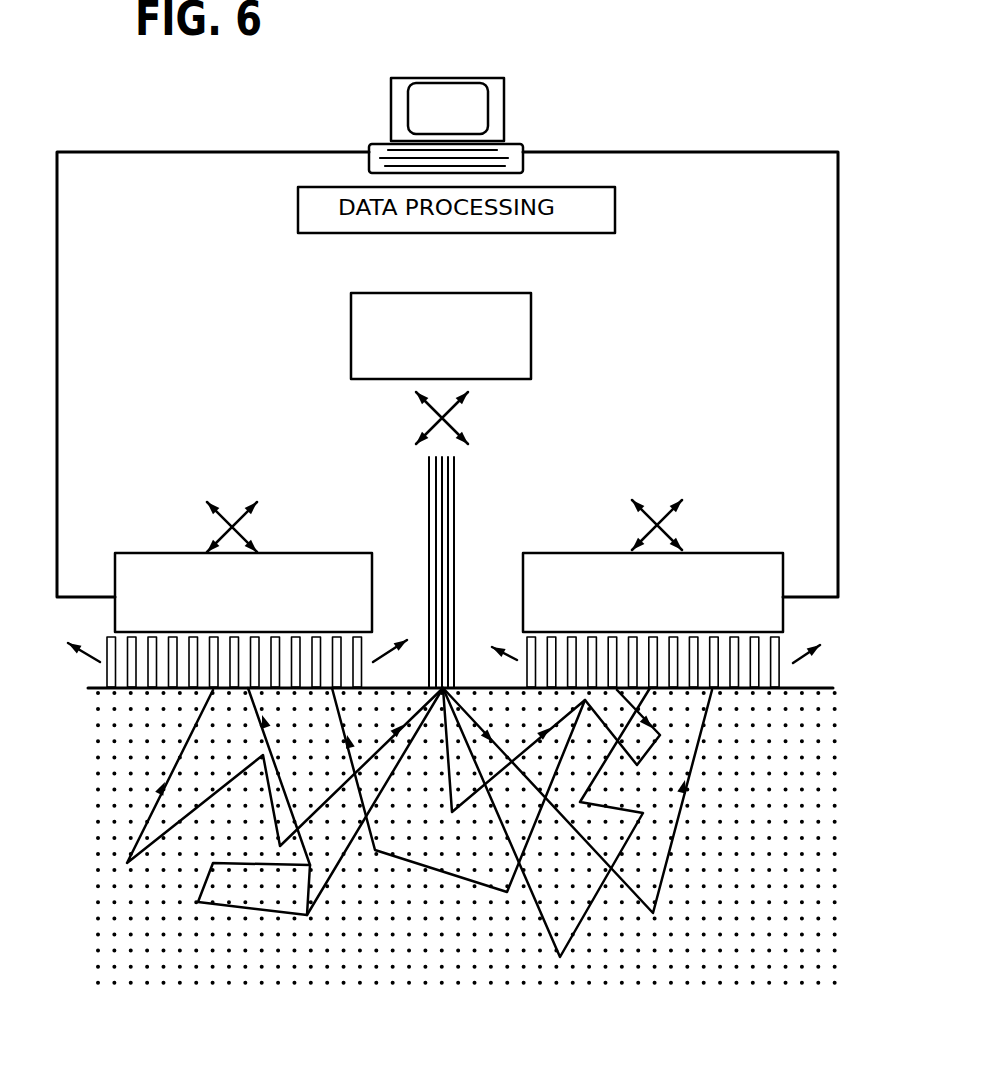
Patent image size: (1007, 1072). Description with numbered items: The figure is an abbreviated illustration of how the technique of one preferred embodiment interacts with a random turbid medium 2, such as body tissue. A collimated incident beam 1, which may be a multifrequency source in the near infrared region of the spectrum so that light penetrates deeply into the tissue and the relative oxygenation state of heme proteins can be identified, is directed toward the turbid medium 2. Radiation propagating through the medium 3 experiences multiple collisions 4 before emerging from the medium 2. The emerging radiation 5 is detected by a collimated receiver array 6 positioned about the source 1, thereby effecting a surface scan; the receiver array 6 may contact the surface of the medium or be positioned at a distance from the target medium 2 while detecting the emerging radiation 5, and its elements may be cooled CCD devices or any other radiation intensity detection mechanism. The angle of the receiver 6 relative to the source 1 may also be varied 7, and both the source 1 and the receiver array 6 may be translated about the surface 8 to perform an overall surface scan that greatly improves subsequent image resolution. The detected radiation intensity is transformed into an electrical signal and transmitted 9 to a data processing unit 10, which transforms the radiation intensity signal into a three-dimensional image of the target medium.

The incident beam 1 is at (463, 490).
The turbid medium 2 is at (445, 835).
The radiation propagating through the medium 3 is at (577, 822).
The multiple collisions 4 is at (320, 801).
The emerging radiation 5 is at (356, 790).
The collimated receiver array 6 is at (447, 601).
The variation of receiver angle 7 is at (444, 633).
The translation about the surface 8 is at (460, 472).
The signal transmission 9 is at (447, 374).
The data processing unit 10 is at (467, 125).